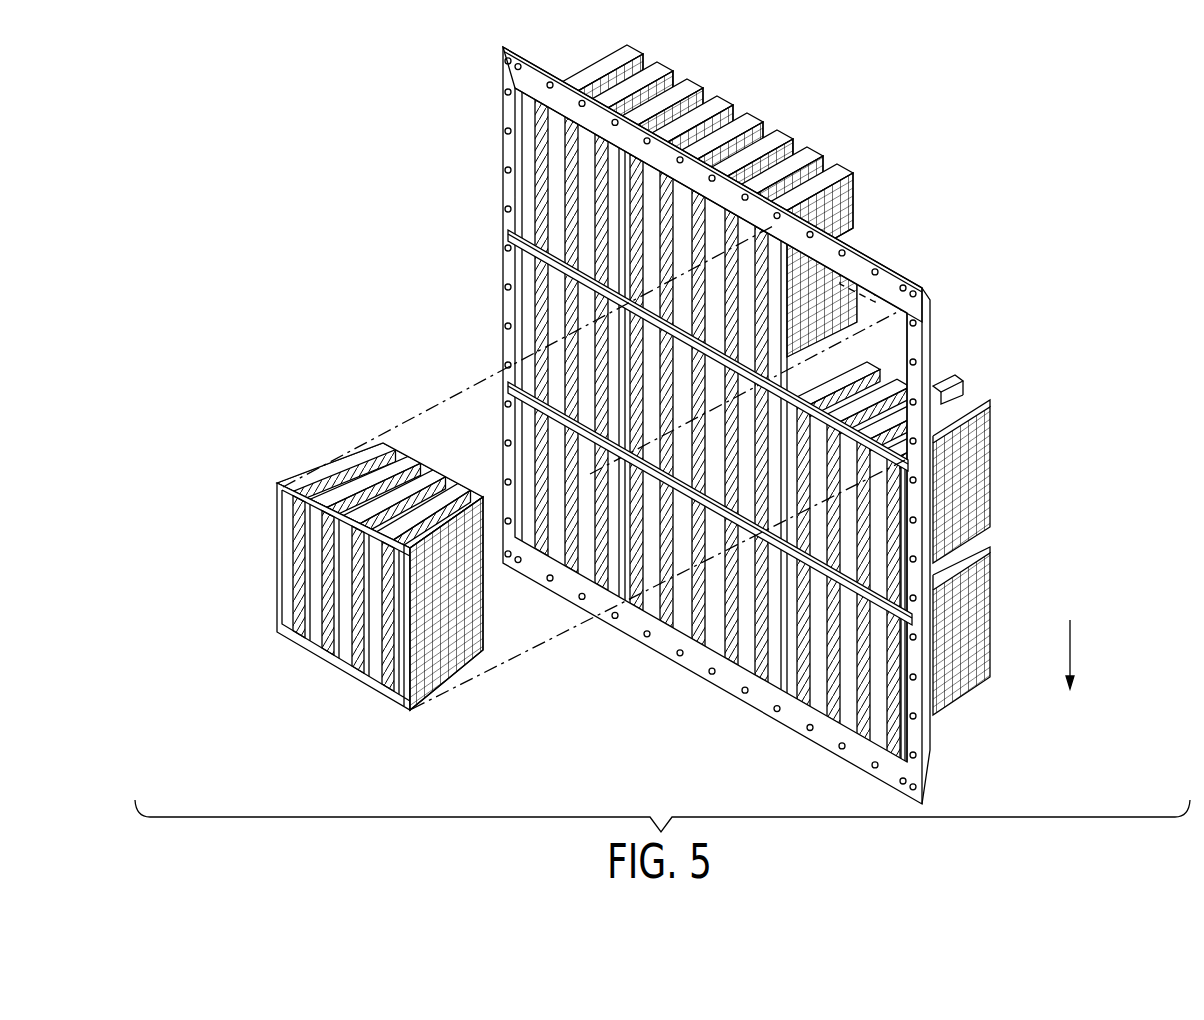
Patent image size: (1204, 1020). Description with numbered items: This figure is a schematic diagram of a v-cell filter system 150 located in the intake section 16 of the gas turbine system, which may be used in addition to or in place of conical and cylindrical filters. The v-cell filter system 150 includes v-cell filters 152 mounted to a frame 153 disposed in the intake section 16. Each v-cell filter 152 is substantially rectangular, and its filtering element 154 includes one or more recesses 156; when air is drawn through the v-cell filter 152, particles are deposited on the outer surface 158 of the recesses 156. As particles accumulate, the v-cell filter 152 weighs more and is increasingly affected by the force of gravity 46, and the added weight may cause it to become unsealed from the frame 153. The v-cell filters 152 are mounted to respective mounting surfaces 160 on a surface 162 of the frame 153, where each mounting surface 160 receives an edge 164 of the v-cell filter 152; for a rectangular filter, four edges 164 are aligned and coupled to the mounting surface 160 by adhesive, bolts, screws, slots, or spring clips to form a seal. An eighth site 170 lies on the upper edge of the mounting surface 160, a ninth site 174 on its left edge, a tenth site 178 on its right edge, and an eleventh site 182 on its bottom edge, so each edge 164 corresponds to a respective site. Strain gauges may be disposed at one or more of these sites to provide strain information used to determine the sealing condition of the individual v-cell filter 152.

The intake section 16 is at (687, 424).
The force of gravity 46 is at (1076, 653).
The v-cell filter system 150 is at (780, 424).
The v-cell filter 152 is at (337, 578).
The frame 153 is at (936, 341).
The filtering element 154 is at (458, 638).
The recesses 156 is at (300, 542).
The outer surface 158 is at (297, 570).
The mounting surface 160 is at (727, 425).
The surface 162 is at (528, 82).
The edge 164 is at (401, 482).
The eighth site 170 is at (878, 263).
The ninth site 174 is at (796, 258).
The tenth site 178 is at (933, 361).
The eleventh site 182 is at (906, 462).